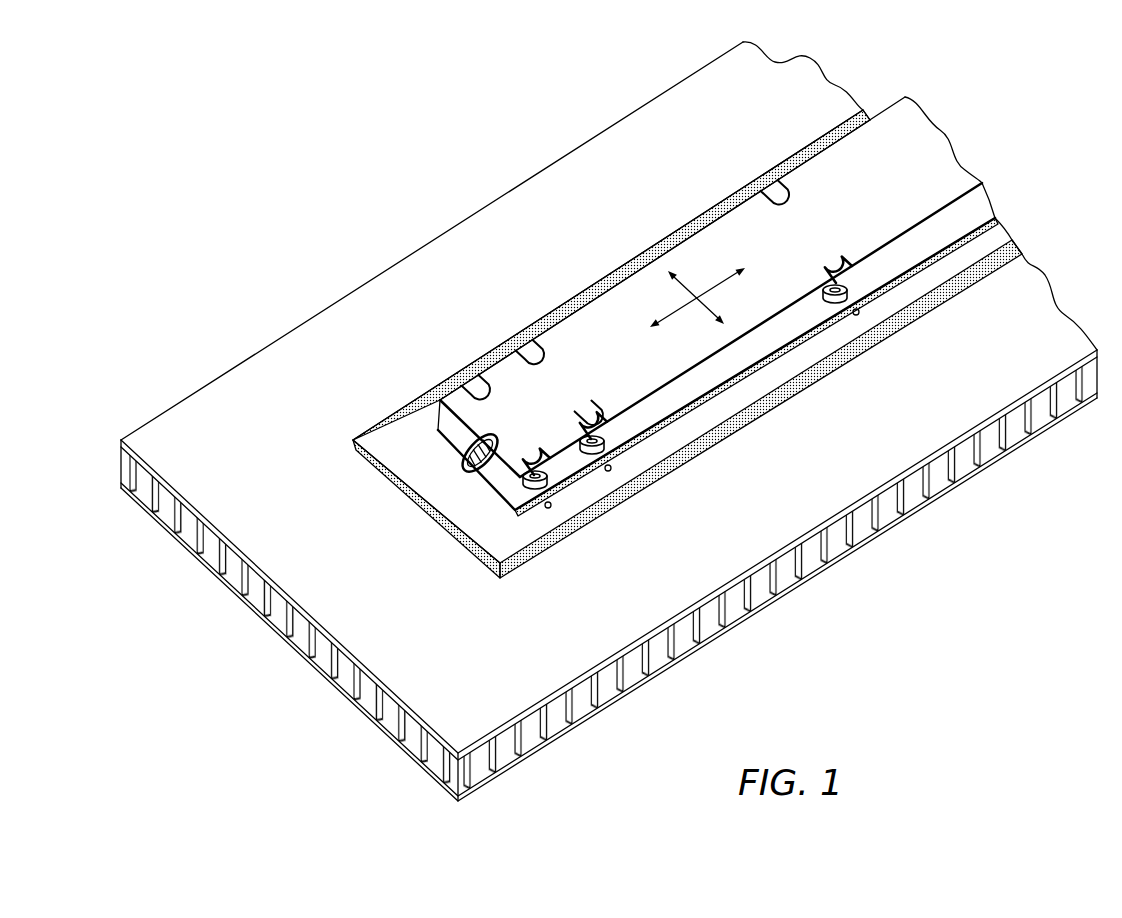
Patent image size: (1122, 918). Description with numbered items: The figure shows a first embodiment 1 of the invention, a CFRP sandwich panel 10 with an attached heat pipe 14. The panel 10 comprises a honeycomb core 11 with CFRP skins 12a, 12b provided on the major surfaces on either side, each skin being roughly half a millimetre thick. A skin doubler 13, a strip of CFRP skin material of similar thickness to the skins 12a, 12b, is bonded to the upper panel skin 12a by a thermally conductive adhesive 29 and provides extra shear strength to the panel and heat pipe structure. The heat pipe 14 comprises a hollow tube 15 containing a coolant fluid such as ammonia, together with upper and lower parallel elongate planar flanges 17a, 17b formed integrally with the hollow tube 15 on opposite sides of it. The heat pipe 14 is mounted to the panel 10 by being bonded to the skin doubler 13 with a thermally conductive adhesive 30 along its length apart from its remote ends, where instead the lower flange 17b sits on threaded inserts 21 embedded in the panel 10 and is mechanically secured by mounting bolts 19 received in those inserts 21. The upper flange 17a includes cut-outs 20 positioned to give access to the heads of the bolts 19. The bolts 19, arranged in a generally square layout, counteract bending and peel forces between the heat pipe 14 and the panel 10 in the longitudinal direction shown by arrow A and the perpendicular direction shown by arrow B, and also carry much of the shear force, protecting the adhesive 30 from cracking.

The first embodiment 1 is at (1010, 78).
The CFRP sandwich panel 10 is at (385, 744).
The honeycomb core 11 is at (697, 641).
The skin 12a is at (907, 468).
The skin 12b is at (890, 533).
The skin doubler 13 is at (395, 453).
The heat pipe 14 is at (806, 148).
The hollow tube 15 is at (500, 463).
The upper elongate flange 17a is at (593, 303).
The lower elongate flange 17b is at (697, 388).
The mounting bolts 19 is at (617, 457).
The cut-outs 20 is at (577, 410).
The threaded inserts 21 is at (603, 468).
The thermally conductive adhesive 29 is at (957, 283).
The thermally conductive adhesive 30 is at (997, 218).